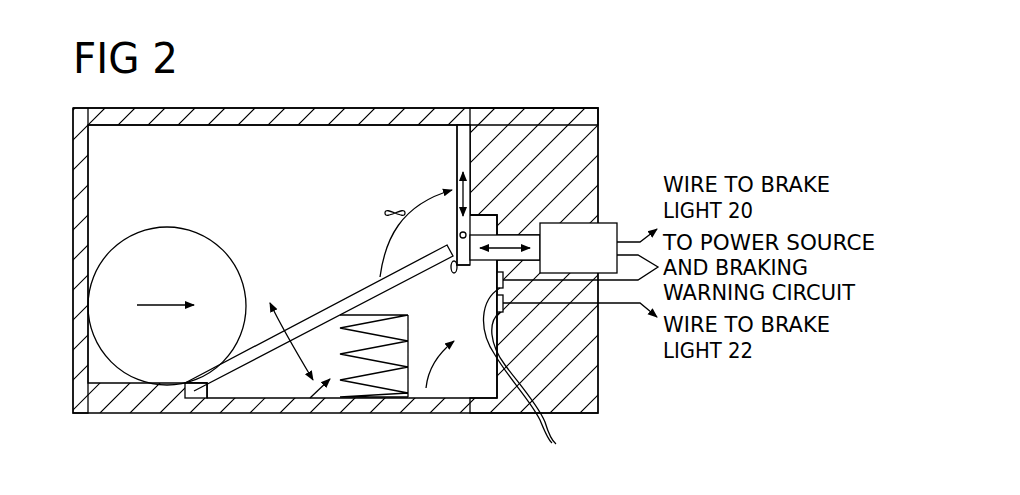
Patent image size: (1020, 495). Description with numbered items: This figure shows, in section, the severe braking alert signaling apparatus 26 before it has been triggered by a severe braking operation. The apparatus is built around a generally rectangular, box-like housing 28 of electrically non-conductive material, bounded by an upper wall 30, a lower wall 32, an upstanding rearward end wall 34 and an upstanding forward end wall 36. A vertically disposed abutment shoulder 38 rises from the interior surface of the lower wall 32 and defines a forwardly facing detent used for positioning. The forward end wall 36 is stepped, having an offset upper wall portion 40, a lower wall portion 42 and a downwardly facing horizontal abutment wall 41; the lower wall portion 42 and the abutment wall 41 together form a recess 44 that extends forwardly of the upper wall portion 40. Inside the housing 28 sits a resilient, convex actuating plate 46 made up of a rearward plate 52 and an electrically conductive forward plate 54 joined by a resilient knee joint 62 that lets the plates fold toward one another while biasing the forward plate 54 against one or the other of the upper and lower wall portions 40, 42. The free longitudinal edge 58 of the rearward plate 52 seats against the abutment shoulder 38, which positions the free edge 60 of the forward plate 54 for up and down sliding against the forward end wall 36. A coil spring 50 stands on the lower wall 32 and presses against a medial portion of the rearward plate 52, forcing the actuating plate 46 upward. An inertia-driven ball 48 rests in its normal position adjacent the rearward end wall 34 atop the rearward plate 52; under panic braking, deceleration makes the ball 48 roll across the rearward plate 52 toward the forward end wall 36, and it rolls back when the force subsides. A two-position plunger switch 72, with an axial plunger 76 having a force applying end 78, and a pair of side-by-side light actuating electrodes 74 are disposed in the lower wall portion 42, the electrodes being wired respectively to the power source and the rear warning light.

The signaling apparatus 26 is at (564, 81).
The housing 28 is at (71, 178).
The upper wall 30 is at (95, 108).
The lower wall 32 is at (336, 398).
The rearward end wall 34 is at (73, 222).
The forward end wall 36 is at (598, 373).
The abutment shoulder 38 is at (205, 398).
The upper wall portion 40 is at (457, 160).
The abutment wall 41 is at (478, 218).
The lower wall portion 42 is at (495, 381).
The recess 44 is at (425, 398).
The actuating plate 46 is at (338, 288).
The ball 48 is at (155, 296).
The coil spring 50 is at (306, 402).
The rearward plate 52 is at (238, 385).
The forward plate 54 is at (450, 163).
The longitudinal edge of rearward plate 58 is at (186, 391).
The longitudinal edge of forward plate 60 is at (466, 125).
The knee joint 62 is at (480, 215).
The plunger switch 72 is at (605, 223).
The light actuating electrodes 74 is at (552, 444).
The plunger 76 is at (600, 245).
The force applying end 78 is at (467, 233).